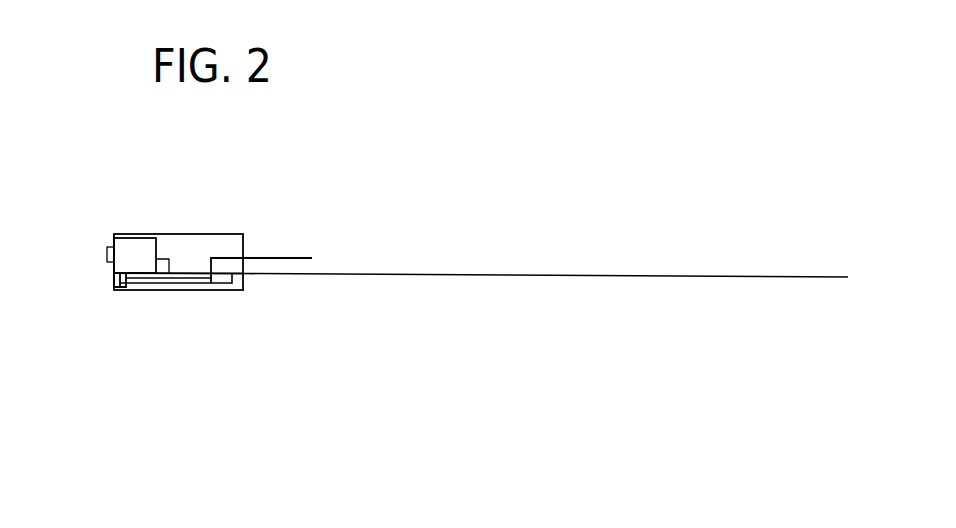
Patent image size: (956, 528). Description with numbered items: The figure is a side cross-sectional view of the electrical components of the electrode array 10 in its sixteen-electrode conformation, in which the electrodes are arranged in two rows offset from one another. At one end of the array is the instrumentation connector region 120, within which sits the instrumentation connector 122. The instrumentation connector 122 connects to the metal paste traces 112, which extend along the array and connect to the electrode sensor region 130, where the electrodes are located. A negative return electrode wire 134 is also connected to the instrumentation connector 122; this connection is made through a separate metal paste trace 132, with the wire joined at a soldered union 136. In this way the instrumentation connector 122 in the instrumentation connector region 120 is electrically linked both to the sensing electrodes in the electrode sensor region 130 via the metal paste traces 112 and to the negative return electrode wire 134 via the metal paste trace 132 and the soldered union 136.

The electrode array 10 is at (449, 316).
The metal paste traces 112 is at (402, 275).
The instrumentation connector region 120 is at (198, 250).
The instrumentation connector 122 is at (100, 252).
The electrode sensor region 130 is at (820, 276).
The metal paste trace 132 is at (140, 283).
The negative return electrode wire 134 is at (258, 262).
The soldered union 136 is at (208, 295).